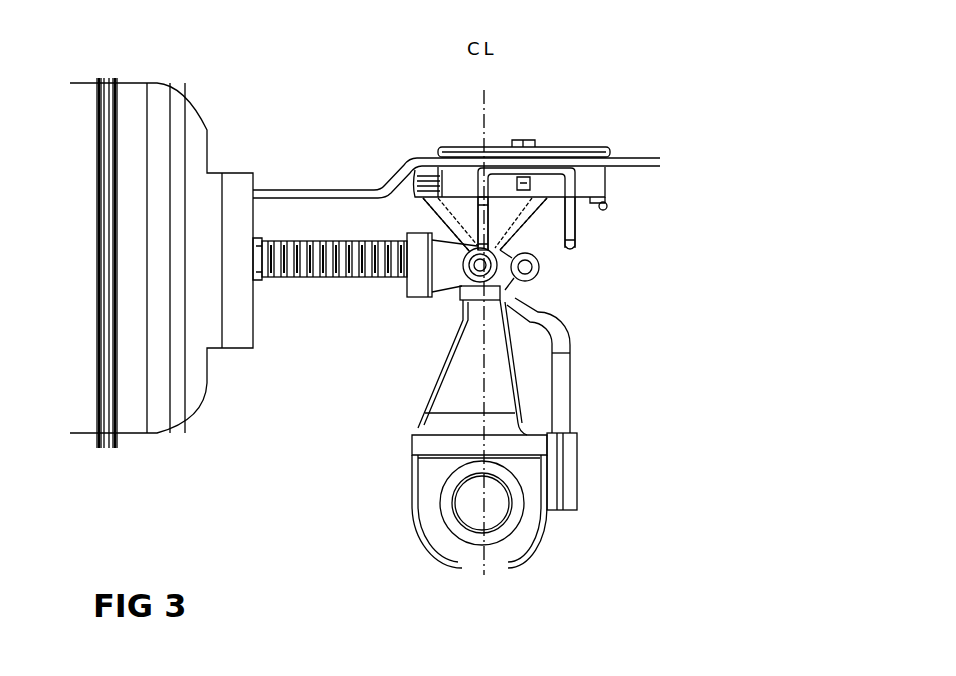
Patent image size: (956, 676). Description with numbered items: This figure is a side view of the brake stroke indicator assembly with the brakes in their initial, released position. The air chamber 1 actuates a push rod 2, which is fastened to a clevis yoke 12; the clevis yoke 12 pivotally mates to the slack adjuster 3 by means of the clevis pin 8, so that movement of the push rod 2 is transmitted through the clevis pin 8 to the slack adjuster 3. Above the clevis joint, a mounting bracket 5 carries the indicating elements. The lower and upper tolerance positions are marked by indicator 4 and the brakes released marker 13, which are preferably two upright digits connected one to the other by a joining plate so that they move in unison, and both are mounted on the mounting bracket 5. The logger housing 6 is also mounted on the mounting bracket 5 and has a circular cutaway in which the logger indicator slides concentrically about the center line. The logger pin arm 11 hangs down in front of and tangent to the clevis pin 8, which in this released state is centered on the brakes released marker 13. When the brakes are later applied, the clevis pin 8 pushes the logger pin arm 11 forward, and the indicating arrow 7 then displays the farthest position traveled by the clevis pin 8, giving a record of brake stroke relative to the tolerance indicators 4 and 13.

The air chamber 1 is at (203, 117).
The push rod 2 is at (311, 277).
The slack adjuster 3 is at (505, 368).
The lower tolerance indicator 4 is at (575, 240).
The mounting bracket 5 is at (323, 185).
The logger housing 6 is at (585, 147).
The indicating arrow 7 is at (533, 249).
The clevis pin 8 is at (477, 283).
The logger pin arm 11 is at (496, 272).
The clevis yoke 12 is at (424, 269).
The brakes released marker 13 is at (482, 216).